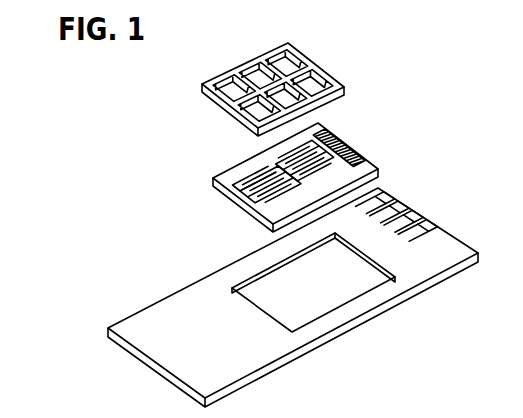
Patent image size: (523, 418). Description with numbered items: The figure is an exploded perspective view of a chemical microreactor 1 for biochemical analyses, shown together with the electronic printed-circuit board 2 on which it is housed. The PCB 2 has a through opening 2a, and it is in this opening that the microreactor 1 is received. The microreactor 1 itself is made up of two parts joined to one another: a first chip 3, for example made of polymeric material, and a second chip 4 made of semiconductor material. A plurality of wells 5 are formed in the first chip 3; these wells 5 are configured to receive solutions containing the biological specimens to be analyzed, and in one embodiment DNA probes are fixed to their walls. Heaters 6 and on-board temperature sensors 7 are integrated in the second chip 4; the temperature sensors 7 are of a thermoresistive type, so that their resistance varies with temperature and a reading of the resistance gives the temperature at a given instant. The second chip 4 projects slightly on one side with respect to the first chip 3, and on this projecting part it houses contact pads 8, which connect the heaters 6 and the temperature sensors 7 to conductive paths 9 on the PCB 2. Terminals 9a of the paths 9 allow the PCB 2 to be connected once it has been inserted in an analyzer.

The microreactor 1 is at (104, 167).
The electronic printed-circuit board 2 is at (158, 351).
The through opening 2a is at (350, 283).
The first chip 3 is at (202, 85).
The second chip 4 is at (212, 186).
The wells 5 is at (260, 72).
The heaters 6 is at (258, 204).
The on-board temperature sensors 7 is at (256, 181).
The contact pads 8 is at (334, 172).
The conductive paths 9 is at (407, 255).
The terminals 9a is at (396, 205).